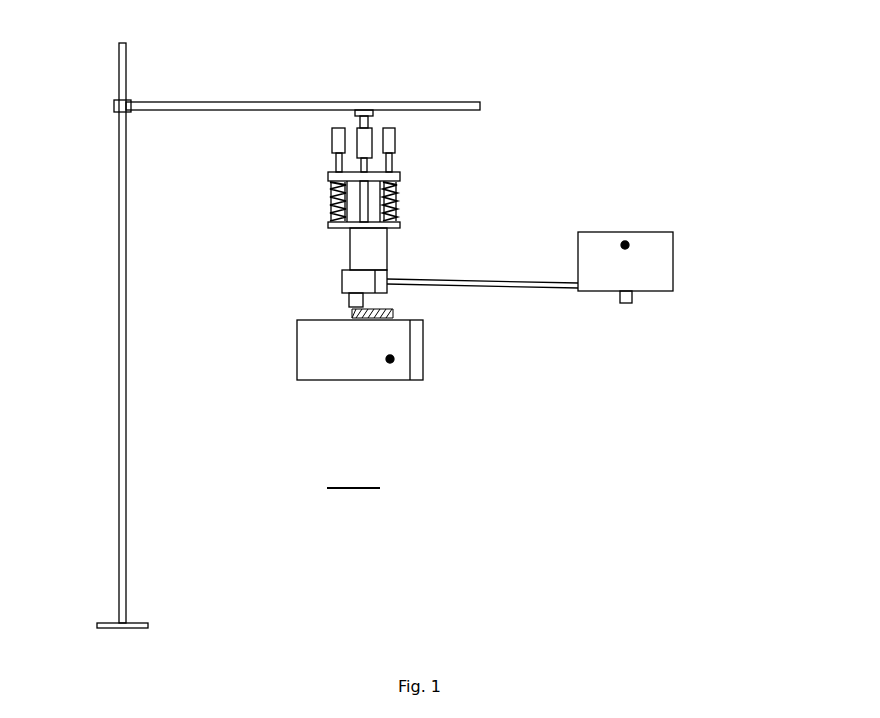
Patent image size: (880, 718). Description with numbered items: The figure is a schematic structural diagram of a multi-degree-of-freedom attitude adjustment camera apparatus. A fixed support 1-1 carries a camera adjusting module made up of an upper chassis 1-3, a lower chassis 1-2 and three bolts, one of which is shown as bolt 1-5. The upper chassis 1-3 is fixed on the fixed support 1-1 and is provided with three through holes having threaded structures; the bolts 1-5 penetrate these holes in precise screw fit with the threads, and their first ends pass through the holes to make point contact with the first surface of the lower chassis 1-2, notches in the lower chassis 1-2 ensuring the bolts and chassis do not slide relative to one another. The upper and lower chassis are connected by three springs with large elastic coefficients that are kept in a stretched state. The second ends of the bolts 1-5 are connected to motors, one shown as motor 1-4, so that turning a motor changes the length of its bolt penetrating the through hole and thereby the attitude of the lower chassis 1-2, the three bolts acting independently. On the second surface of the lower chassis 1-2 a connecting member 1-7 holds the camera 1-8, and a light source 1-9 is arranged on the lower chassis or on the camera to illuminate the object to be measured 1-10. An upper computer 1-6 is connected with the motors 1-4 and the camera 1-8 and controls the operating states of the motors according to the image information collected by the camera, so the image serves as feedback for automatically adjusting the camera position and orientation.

The fixed support 1-1 is at (119, 380).
The lower chassis 1-2 is at (353, 223).
The upper chassis 1-3 is at (362, 172).
The motor 1-4 is at (395, 156).
The bolt 1-5 is at (398, 192).
The upper computer 1-6 is at (625, 245).
The connecting member 1-7 is at (368, 303).
The camera 1-8 is at (358, 314).
The light source 1-9 is at (390, 359).
The object to be measured 1-10 is at (381, 489).